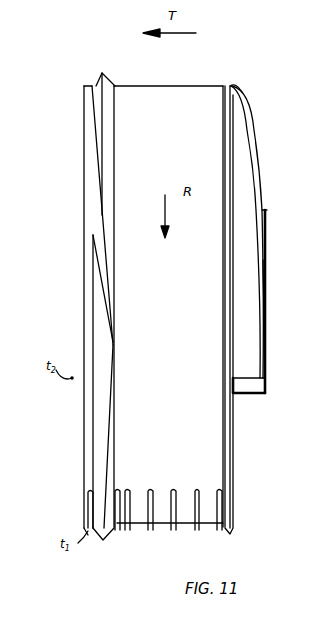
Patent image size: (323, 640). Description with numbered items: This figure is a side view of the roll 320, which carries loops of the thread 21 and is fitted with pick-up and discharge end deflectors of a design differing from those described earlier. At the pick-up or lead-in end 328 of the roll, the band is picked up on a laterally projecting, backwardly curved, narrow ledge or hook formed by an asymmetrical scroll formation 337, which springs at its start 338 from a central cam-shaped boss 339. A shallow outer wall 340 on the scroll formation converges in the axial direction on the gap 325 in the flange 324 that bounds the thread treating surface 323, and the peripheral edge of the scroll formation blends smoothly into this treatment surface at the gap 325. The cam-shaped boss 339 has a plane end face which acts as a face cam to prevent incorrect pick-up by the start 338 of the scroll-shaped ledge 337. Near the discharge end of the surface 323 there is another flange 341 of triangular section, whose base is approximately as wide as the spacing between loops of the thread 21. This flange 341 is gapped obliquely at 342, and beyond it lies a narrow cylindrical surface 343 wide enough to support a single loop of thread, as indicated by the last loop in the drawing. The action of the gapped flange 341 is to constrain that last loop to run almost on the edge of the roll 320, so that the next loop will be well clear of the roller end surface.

The thread 21 is at (220, 528).
The roll 320 is at (84, 152).
The thread treating surface 323 is at (175, 95).
The flange 324 is at (225, 84).
The gap 325 is at (234, 78).
The pick-up or lead-in end 328 is at (236, 478).
The asymmetrical scroll formation 337 is at (252, 327).
The start of the scroll-shaped ledge 338 is at (250, 378).
The cam-shaped boss 339 is at (288, 216).
The shallow outer wall 340 is at (255, 142).
The flange of triangular section 341 is at (102, 73).
The oblique gap 342 is at (112, 352).
The narrow cylindrical surface 343 is at (88, 85).